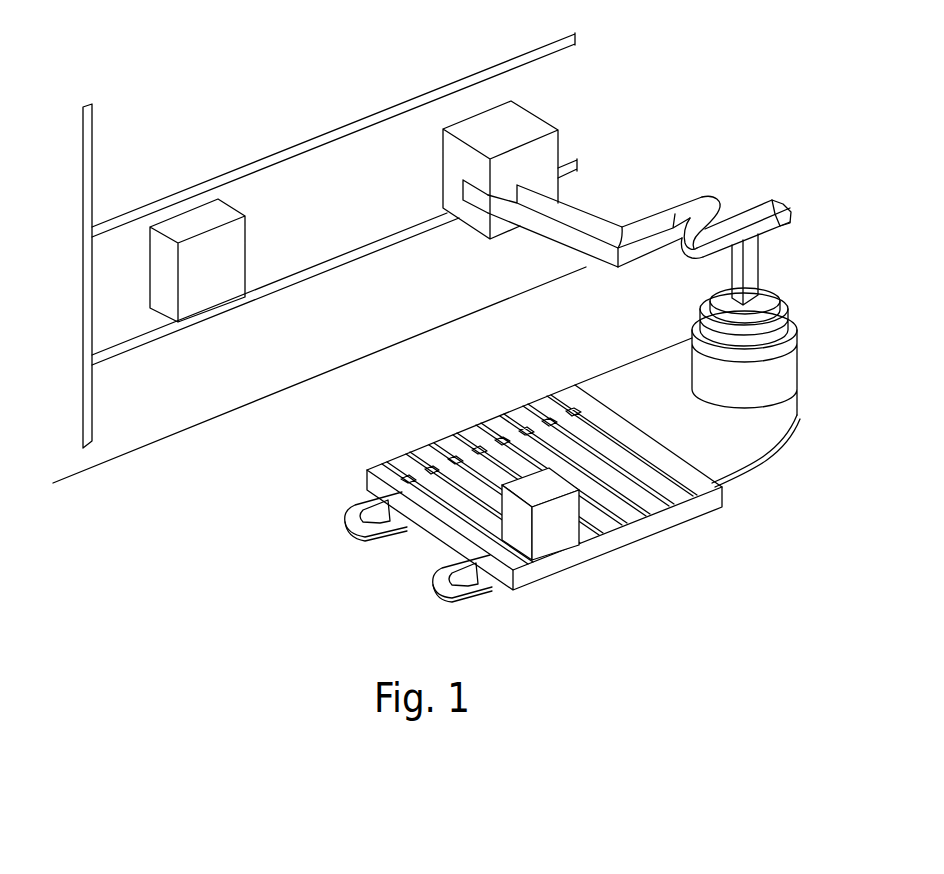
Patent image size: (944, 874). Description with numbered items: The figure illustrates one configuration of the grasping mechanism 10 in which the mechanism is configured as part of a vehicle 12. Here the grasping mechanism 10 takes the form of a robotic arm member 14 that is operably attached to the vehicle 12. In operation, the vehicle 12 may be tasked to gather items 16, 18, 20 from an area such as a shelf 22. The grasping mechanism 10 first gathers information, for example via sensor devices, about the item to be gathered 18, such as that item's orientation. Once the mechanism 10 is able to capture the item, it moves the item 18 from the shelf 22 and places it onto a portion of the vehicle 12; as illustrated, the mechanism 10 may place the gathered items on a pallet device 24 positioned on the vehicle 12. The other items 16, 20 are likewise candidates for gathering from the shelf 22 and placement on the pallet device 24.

The grasping mechanism 10 is at (598, 277).
The vehicle 12 is at (784, 310).
The robotic arm member 14 is at (698, 196).
The item 16 is at (570, 536).
The item to be gathered 18 is at (513, 138).
The item 20 is at (225, 278).
The shelf 22 is at (293, 145).
The pallet device 24 is at (723, 492).